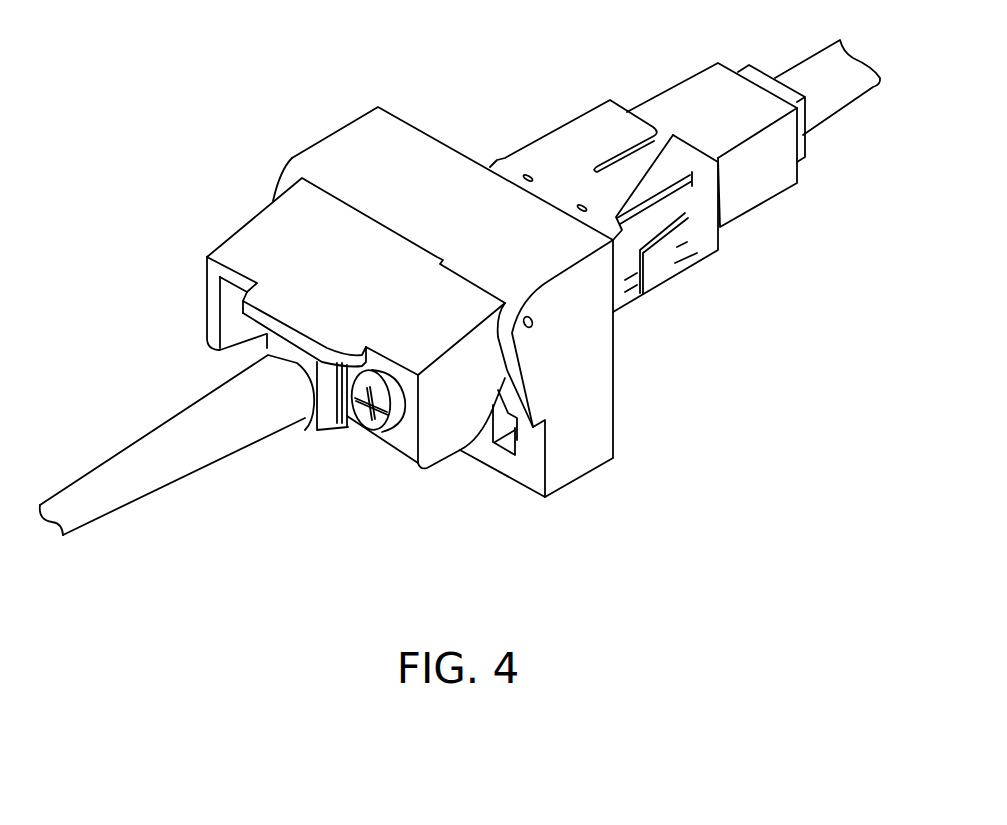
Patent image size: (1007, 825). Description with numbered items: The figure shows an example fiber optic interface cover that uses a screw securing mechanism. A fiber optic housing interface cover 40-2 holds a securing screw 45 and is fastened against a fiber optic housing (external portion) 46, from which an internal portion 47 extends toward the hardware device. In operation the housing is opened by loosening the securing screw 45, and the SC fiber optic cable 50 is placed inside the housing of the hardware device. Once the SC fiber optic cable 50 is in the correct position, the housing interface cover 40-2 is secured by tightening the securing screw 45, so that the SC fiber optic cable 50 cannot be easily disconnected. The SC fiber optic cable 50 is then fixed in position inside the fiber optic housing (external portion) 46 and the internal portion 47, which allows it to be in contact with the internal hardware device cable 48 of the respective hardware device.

The fiber optic housing interface cover 40-2 is at (246, 240).
The securing screw 45 is at (377, 425).
The fiber optic housing (external portion) 46 is at (366, 138).
The internal portion 47 is at (655, 270).
The internal hardware device cable 48 is at (812, 70).
The SC fiber optic cable 50 is at (170, 468).